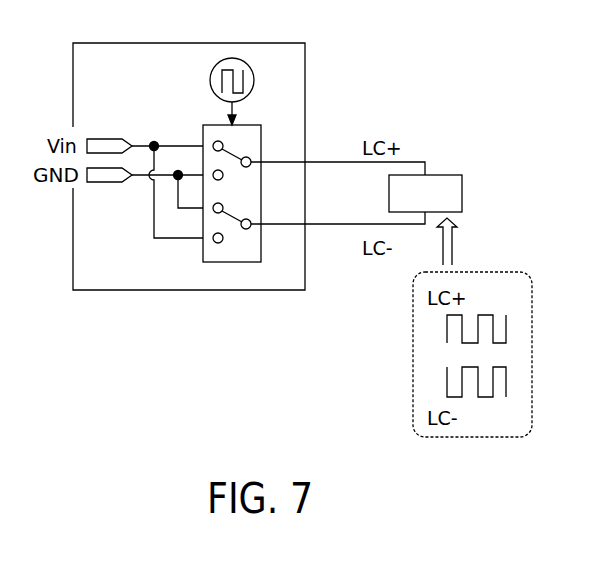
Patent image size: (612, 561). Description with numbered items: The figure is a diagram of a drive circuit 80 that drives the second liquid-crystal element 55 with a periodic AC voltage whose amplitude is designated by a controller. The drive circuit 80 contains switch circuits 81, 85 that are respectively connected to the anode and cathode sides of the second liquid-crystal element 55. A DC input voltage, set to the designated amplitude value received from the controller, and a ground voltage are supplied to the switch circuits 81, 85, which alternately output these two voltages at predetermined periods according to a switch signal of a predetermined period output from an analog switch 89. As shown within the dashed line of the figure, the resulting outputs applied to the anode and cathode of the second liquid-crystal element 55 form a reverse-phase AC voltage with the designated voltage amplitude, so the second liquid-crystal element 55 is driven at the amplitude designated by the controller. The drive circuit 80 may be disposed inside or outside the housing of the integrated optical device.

The drive circuit 80 is at (306, 43).
The switch circuit 81 is at (207, 187).
The switch circuit 85 is at (237, 243).
The analog switch 89 is at (210, 80).
The second liquid-crystal element 55 is at (463, 177).